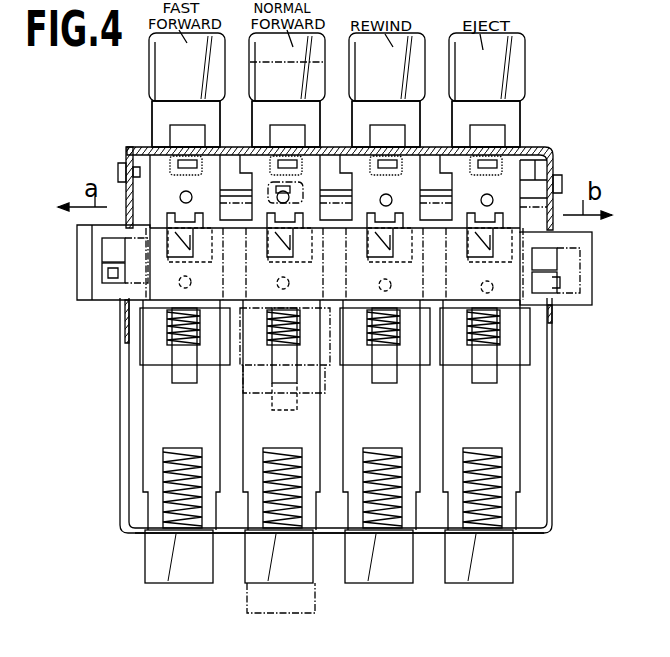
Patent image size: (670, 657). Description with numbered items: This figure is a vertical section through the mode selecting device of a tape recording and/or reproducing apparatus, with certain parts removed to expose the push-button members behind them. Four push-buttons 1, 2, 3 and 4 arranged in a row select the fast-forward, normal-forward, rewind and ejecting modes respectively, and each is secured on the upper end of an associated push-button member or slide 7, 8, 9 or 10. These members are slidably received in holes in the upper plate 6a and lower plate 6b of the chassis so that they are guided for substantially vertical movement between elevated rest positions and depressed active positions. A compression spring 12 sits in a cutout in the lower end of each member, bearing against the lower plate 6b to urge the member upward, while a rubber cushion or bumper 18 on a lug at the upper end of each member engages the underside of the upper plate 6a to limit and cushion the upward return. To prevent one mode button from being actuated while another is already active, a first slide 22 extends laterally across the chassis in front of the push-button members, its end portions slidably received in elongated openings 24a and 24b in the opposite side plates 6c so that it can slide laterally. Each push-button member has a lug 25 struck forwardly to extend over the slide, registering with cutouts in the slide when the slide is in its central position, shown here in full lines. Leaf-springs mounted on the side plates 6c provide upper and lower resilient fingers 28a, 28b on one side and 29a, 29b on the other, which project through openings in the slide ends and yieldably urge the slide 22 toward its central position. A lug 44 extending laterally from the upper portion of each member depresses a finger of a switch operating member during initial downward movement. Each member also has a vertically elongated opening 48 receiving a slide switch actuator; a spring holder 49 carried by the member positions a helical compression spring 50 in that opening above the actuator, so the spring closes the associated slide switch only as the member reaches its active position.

The push-button 1 is at (155, 80).
The push-button 2 is at (260, 82).
The push-button 3 is at (360, 83).
The push-button 4 is at (458, 85).
The upper plate 6a is at (528, 152).
The lower plate 6b is at (532, 535).
The side plate 6c is at (122, 432).
The push-button member 7 is at (157, 128).
The push-button member 8 is at (258, 136).
The push-button member 9 is at (360, 137).
The push-button member 10 is at (457, 138).
The compression spring 12 is at (263, 520).
The rubber cushion 18 is at (185, 145).
The first slide 22 is at (585, 268).
The elongated opening 24a is at (125, 298).
The elongated opening 24b is at (555, 306).
The lug 25 is at (183, 204).
The upper resilient finger 28a is at (103, 252).
The lower resilient finger 28b is at (103, 277).
The upper resilient finger 29a is at (562, 257).
The lower resilient finger 29b is at (565, 282).
The lug 44 is at (535, 170).
The vertically elongated opening 48 is at (183, 377).
The spring holder 49 is at (150, 352).
The helical compression spring 50 is at (185, 311).